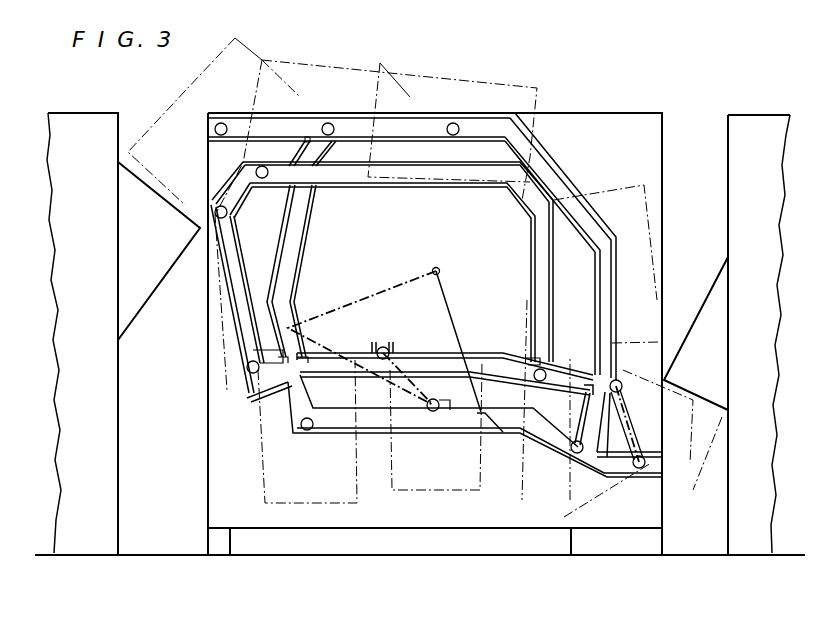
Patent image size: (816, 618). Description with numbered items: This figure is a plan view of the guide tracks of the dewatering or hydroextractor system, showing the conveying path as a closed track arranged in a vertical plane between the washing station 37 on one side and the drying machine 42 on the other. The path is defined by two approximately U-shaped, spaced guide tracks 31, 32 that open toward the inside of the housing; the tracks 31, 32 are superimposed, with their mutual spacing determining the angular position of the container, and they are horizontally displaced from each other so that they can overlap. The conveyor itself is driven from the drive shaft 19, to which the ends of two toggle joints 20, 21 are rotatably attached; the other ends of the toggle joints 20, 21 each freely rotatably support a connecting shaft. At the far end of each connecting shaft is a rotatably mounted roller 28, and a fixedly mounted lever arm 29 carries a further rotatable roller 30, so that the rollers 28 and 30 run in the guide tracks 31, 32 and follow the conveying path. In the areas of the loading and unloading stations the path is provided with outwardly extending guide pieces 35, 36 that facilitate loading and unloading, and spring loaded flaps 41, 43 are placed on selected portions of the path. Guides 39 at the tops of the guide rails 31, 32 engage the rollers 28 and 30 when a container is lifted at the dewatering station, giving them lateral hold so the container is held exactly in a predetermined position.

The drive shaft 19 is at (436, 268).
The toggle joint 20 is at (383, 290).
The toggle joint 21 is at (443, 290).
The roller 28 is at (436, 410).
The lever arm 29 is at (386, 360).
The roller 30 is at (379, 349).
The guide track 31 is at (375, 435).
The guide track 32 is at (453, 352).
The guide piece 35 is at (666, 453).
The guide piece 36 is at (237, 130).
The washing station 37 is at (729, 486).
The guide 39 is at (396, 347).
The spring loaded flap 41 is at (312, 128).
The drying machine 42 is at (119, 478).
The spring loaded flap 43 is at (528, 362).